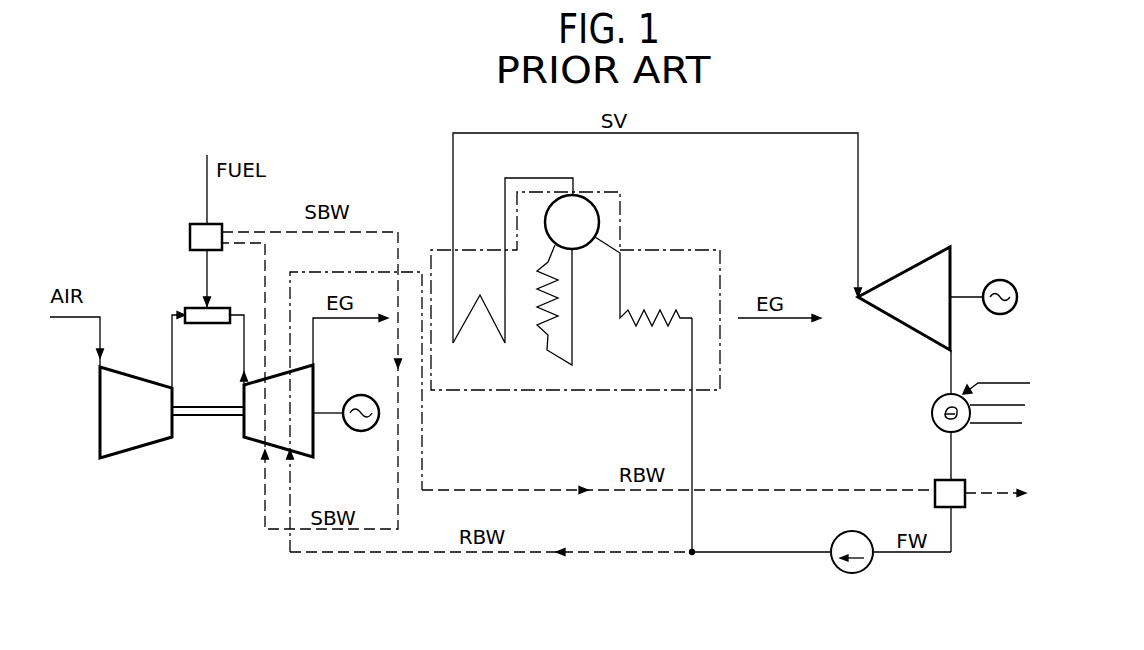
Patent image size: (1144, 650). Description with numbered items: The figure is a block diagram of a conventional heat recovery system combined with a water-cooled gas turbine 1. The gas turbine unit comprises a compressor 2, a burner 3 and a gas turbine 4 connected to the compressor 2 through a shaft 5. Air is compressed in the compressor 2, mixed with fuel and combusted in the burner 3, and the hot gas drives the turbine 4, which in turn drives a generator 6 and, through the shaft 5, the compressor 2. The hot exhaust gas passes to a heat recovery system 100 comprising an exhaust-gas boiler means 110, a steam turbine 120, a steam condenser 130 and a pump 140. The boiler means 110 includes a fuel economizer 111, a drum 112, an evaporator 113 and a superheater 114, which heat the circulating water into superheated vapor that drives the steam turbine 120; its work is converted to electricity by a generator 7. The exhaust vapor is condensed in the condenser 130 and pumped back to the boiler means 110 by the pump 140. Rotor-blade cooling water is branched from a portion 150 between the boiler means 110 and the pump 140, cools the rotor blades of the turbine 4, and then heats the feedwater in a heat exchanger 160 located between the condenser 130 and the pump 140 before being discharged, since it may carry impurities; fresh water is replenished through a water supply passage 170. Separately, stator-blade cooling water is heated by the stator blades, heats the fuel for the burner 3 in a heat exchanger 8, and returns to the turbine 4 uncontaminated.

The water-cooled gas turbine 1 is at (206, 456).
The compressor 2 is at (137, 450).
The burner 3 is at (207, 326).
The gas turbine 4 is at (250, 440).
The shaft 5 is at (208, 436).
The generator 6 is at (353, 432).
The generator 7 is at (995, 282).
The heat exchanger 8 is at (190, 238).
The heat recovery system 100 is at (862, 150).
The exhaust-gas boiler means 110 is at (577, 269).
The fuel economizer 111 is at (646, 322).
The drum 112 is at (592, 205).
The evaporator 113 is at (546, 335).
The superheater 114 is at (490, 315).
The steam turbine 120 is at (887, 312).
The steam condenser 130 is at (962, 432).
The pump 140 is at (843, 577).
The portion 150 is at (692, 555).
The heat exchanger 160 is at (963, 508).
The water supply passage 170 is at (1008, 383).